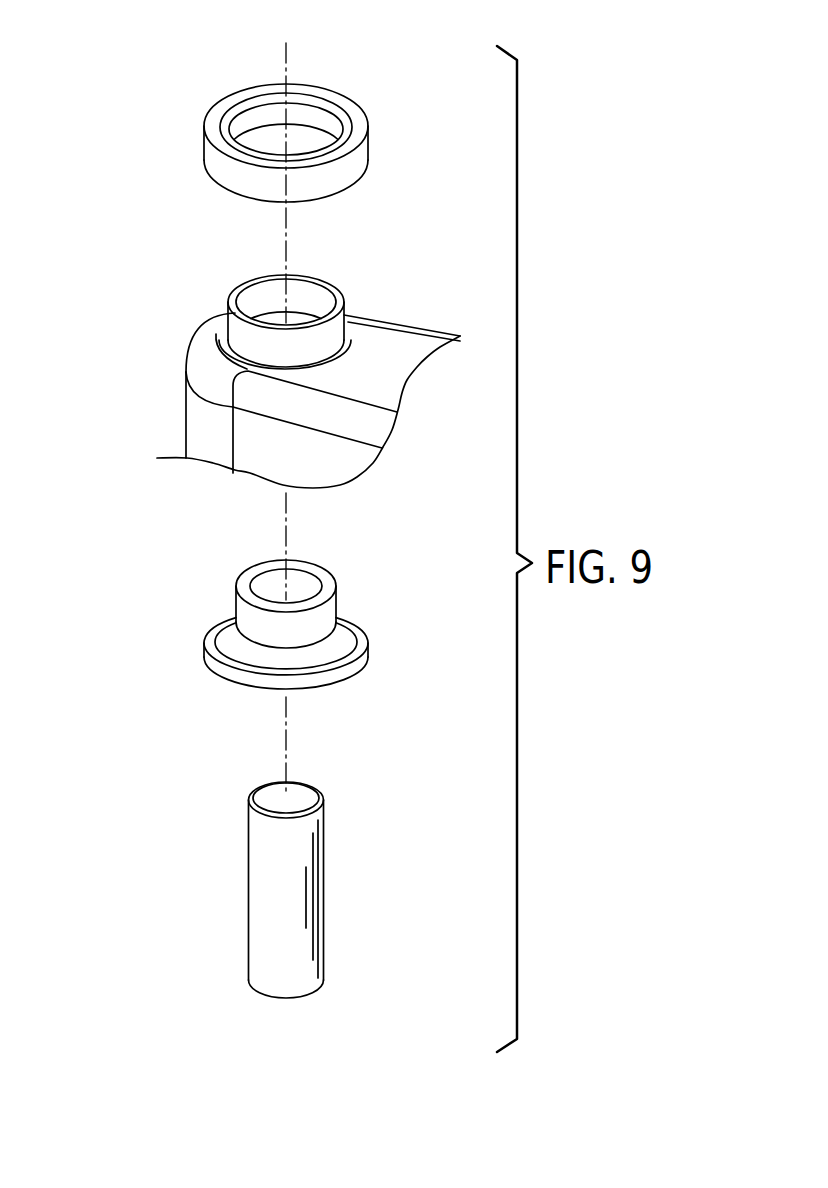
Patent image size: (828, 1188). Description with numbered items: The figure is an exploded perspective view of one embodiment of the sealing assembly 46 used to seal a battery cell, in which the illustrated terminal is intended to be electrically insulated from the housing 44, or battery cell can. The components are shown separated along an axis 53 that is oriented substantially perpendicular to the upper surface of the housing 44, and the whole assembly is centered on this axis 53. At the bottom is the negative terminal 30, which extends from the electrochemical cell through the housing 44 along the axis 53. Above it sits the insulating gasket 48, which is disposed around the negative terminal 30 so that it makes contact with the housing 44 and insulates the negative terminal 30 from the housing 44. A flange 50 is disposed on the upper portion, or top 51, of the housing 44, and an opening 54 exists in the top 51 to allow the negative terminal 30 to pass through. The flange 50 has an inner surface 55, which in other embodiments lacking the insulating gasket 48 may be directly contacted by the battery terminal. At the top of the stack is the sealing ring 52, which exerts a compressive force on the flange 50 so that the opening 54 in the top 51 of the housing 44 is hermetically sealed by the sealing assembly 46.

The sealing assembly 46 is at (172, 41).
The sealing ring 52 is at (355, 128).
The inner surface 55 is at (250, 302).
The opening 54 is at (300, 303).
The flange 50 is at (343, 302).
The top 51 is at (390, 350).
The housing 44 is at (345, 460).
The axis 53 is at (286, 530).
The insulating gasket 48 is at (247, 618).
The negative terminal 30 is at (268, 895).